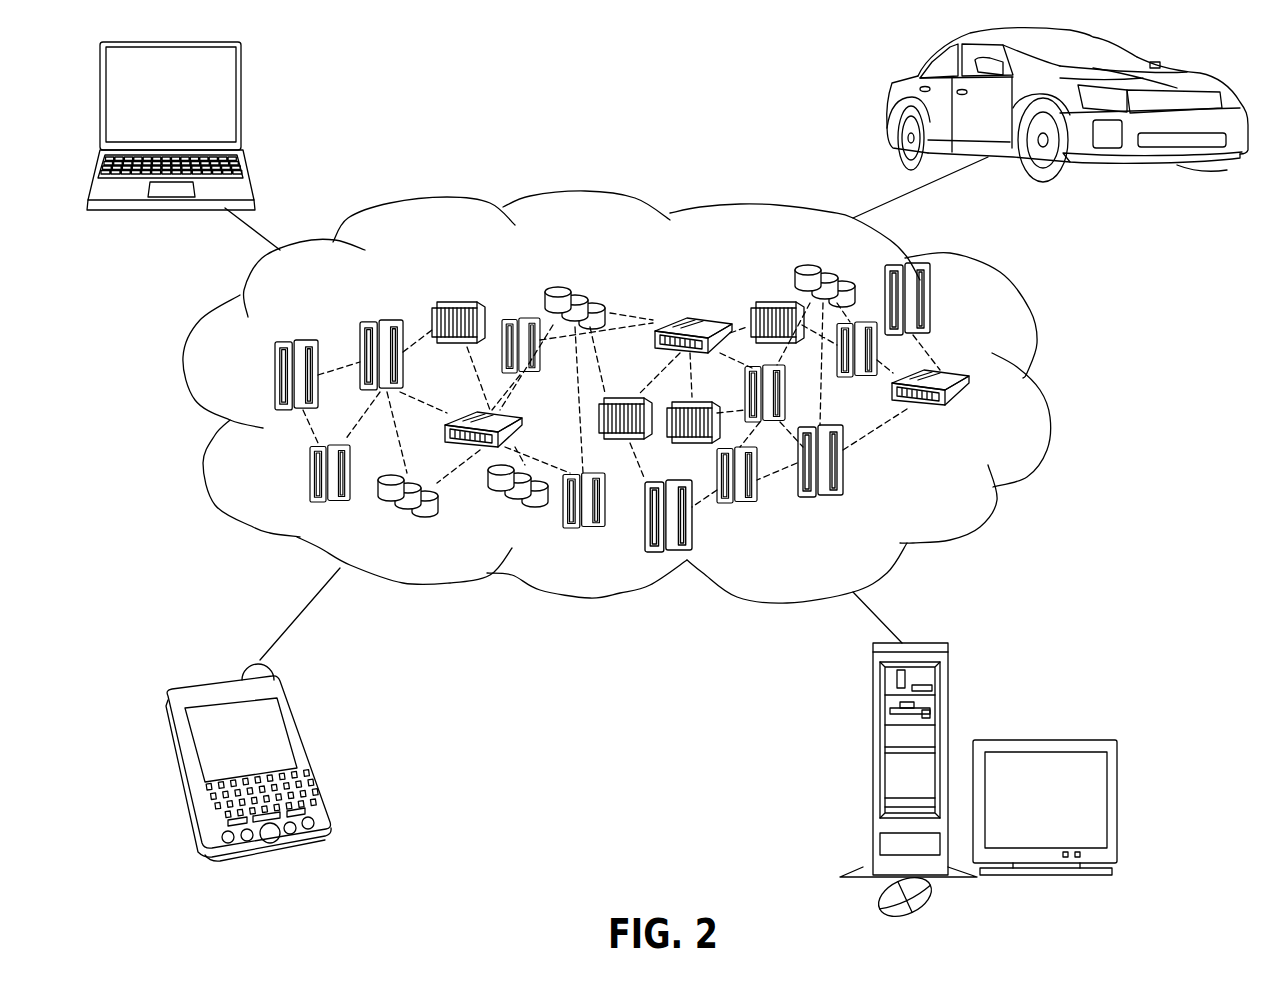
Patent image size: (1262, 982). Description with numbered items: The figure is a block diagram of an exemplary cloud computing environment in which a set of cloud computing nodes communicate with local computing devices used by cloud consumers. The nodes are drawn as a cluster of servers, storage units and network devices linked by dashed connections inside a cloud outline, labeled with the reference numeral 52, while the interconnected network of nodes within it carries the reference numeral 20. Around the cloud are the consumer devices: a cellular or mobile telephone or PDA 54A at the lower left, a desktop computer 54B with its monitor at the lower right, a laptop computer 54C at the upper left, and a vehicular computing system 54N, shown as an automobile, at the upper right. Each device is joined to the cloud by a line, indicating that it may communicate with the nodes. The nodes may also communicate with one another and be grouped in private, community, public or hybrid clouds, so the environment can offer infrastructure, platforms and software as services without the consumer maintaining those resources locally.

The network 20 is at (953, 496).
The cloud 52 is at (1043, 390).
The cellular (or mobile) telephone or PDA 54A is at (297, 720).
The desktop computer 54B is at (872, 705).
The laptop computer 54C is at (242, 80).
The vehicular computing system 54N is at (892, 97).